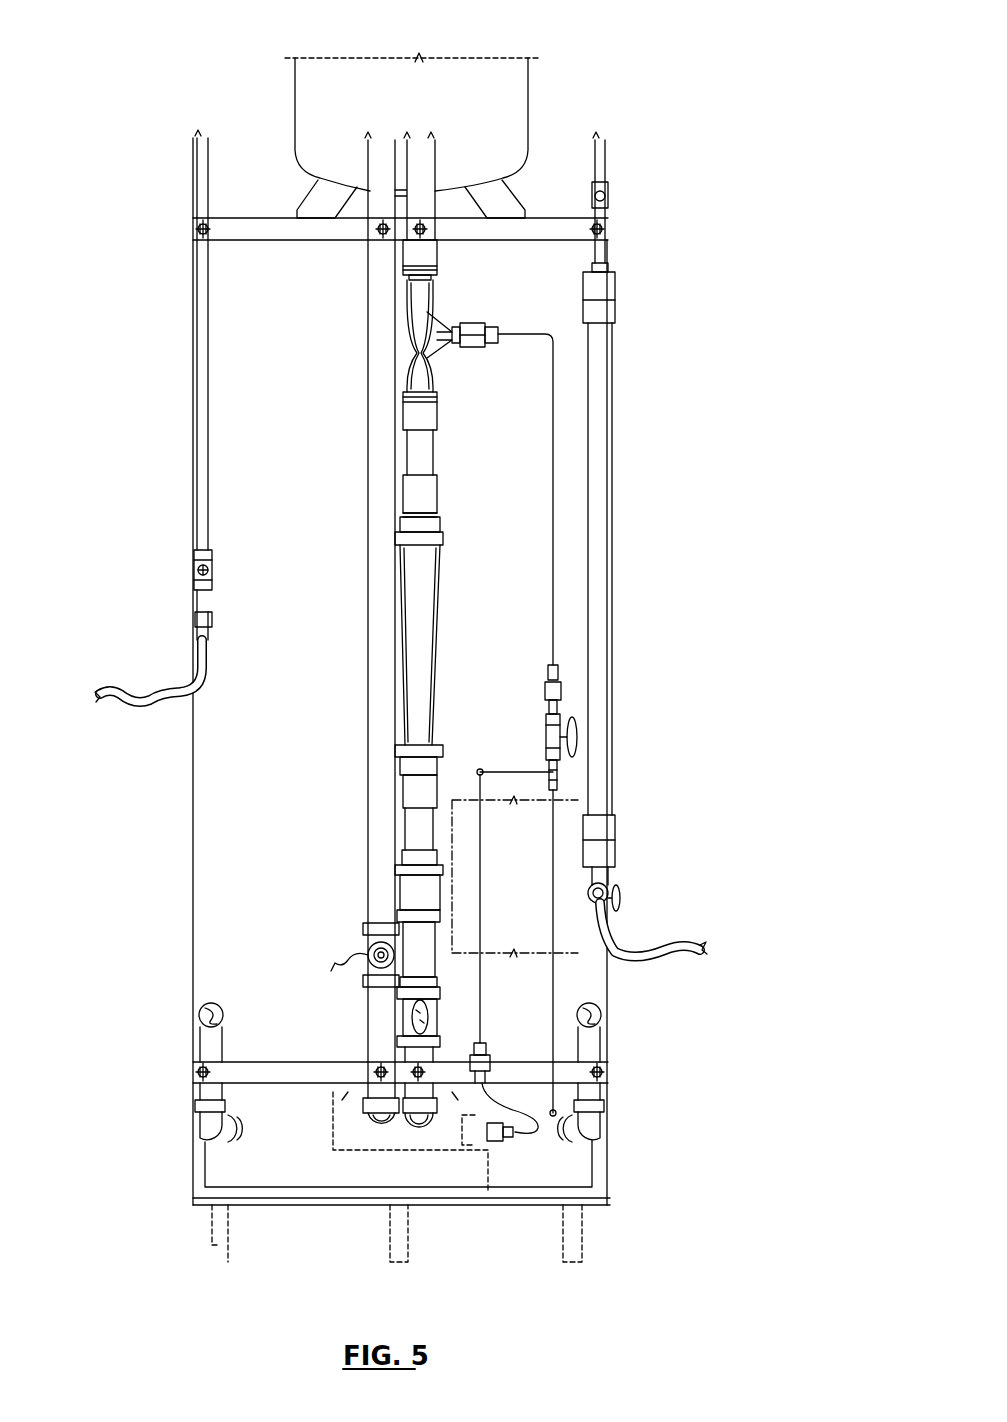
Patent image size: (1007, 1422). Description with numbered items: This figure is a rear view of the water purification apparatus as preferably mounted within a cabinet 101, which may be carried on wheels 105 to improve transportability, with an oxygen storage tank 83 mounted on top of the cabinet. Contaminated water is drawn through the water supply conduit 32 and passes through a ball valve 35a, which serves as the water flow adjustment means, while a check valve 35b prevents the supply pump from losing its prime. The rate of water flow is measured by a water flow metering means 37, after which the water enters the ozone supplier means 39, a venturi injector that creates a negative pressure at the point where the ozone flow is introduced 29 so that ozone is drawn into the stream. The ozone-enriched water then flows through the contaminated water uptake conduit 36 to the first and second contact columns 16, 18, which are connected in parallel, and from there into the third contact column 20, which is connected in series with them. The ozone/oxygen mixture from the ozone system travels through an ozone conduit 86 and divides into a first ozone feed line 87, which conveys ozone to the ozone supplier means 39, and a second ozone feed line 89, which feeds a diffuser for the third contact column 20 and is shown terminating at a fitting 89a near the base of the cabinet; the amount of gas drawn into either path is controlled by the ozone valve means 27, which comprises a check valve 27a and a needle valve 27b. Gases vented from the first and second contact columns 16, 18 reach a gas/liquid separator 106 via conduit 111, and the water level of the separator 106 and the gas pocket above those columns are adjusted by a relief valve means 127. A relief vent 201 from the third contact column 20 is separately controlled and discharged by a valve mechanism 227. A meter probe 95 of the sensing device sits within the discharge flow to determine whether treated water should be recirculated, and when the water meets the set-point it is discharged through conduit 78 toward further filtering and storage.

The first contact column 16 is at (235, 851).
The second contact column 18 is at (573, 917).
The third contact column 20 is at (305, 1166).
The ozone valve means 27 is at (600, 533).
The check valve 27a is at (557, 690).
The needle valve 27b is at (578, 741).
The point where the ozone flow is introduced 29 is at (485, 322).
The water supply conduit 32 is at (605, 1062).
The ball valve 35a is at (400, 1008).
The check valve 35b is at (375, 890).
The contaminated water uptake conduit 36 is at (418, 160).
The water flow metering means 37 is at (440, 588).
The ozone supplier means 39 is at (430, 362).
The conduit 78 is at (200, 1018).
The oxygen storage tank 83 is at (528, 112).
The ozone conduit 86 is at (552, 814).
The first ozone feed line 87 is at (550, 603).
The second ozone feed line 89 is at (481, 1004).
The fitting 89a is at (513, 1125).
The meter probe 95 is at (368, 955).
The cabinet 101 is at (608, 1185).
The wheels 105 is at (582, 1250).
The gas/liquid separator 106 is at (613, 380).
The conduit 111 is at (605, 162).
The relief valve means 127 is at (628, 885).
The relief vent 201 is at (195, 498).
The valve mechanism 227 is at (192, 583).